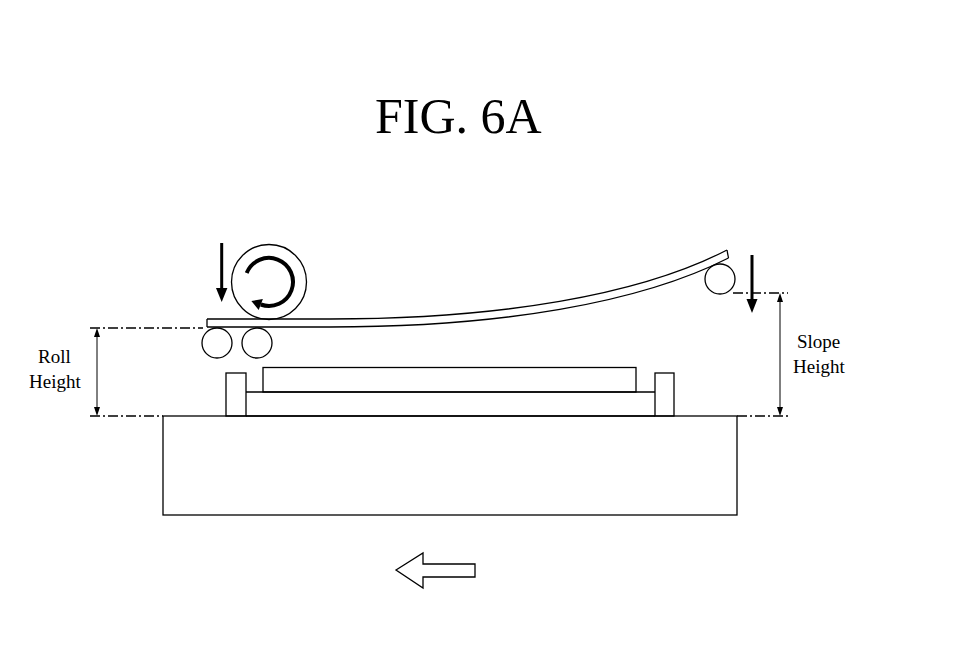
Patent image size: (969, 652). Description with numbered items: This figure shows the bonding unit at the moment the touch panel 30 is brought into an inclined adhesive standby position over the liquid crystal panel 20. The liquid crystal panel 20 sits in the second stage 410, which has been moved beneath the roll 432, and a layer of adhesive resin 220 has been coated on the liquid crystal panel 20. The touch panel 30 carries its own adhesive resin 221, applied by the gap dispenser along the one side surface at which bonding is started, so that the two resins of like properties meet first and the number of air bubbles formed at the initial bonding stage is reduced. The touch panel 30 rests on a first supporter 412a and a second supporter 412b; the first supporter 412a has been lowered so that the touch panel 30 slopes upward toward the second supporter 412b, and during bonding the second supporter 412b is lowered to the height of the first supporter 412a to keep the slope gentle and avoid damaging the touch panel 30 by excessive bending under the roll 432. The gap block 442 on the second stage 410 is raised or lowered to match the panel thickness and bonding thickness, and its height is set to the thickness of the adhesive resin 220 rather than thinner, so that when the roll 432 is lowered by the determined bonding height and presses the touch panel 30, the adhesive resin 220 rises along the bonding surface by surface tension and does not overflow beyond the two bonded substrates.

The roll 432 is at (287, 246).
The touch panel 30 is at (458, 317).
The first supporter 412a is at (202, 337).
The adhesive resin 221 is at (272, 340).
The second supporter 412b is at (710, 291).
The gap block 442 is at (674, 393).
The adhesive resin 220 is at (575, 380).
The liquid crystal panel 20 is at (622, 405).
The second stage 410 is at (737, 465).